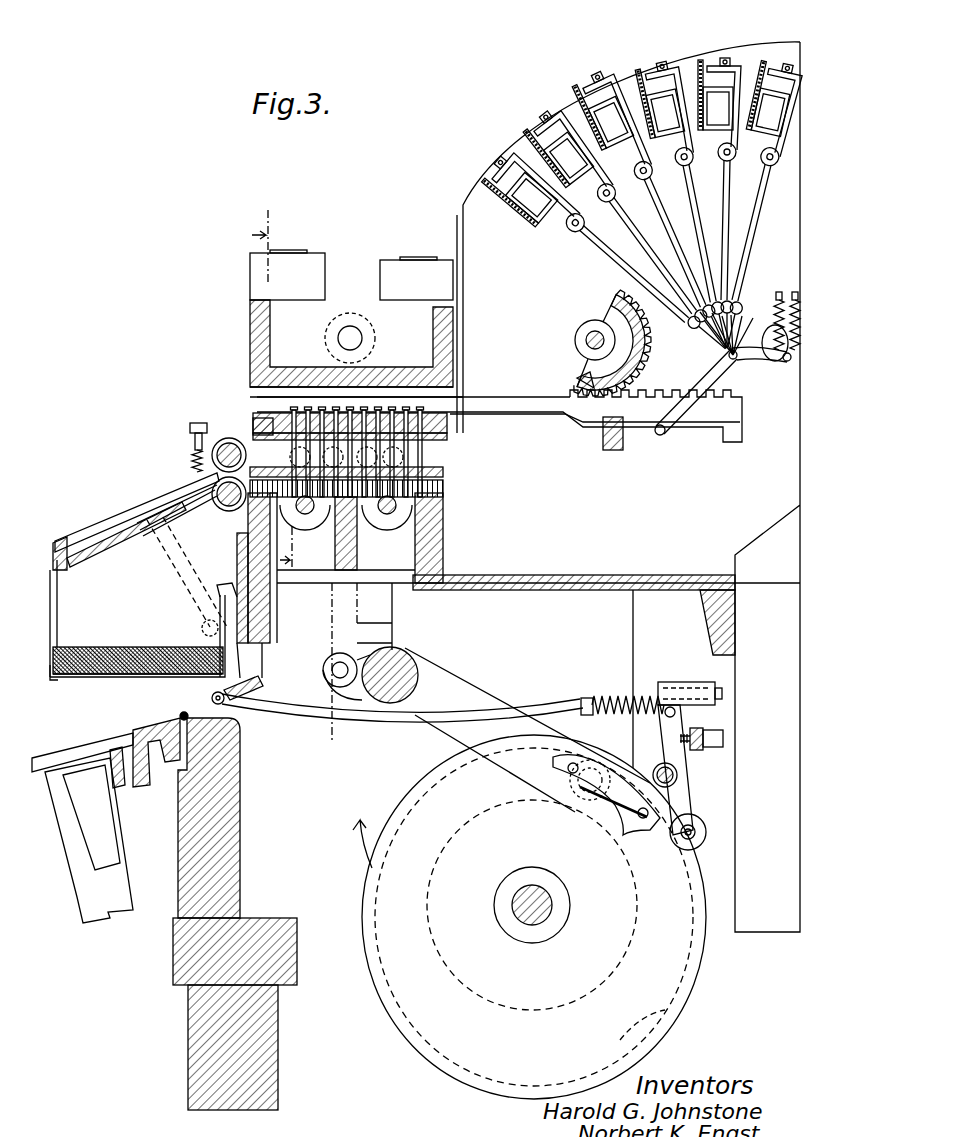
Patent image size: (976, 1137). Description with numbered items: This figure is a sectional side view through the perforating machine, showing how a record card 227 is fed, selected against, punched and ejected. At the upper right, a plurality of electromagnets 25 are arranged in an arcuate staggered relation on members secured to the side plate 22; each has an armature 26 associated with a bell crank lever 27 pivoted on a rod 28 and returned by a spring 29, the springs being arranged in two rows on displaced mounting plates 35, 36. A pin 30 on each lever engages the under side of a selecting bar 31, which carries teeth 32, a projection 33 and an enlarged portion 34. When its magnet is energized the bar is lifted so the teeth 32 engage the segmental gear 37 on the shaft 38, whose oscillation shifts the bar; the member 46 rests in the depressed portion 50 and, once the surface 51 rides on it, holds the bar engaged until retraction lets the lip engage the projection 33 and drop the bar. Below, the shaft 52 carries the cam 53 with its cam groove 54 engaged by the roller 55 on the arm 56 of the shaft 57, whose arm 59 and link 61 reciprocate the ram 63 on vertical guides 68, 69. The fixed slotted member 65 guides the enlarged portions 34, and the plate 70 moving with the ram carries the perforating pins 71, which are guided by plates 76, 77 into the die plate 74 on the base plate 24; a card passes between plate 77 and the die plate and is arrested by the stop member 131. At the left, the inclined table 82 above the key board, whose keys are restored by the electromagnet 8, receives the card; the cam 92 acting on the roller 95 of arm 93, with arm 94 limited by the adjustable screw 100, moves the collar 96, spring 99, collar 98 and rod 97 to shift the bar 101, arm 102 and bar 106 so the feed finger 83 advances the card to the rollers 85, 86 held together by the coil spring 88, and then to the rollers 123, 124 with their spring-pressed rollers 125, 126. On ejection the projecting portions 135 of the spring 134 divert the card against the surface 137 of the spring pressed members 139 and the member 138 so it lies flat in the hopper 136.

The electromagnet 8 is at (105, 835).
The side plate 22 is at (792, 298).
The base plate 24 is at (530, 582).
The electromagnet 25 is at (590, 125).
The armature 26 is at (605, 235).
The bell crank lever 27 is at (758, 370).
The rod 28 is at (728, 355).
The spring 29 is at (783, 362).
The pin 30 is at (664, 436).
The selecting bar 31 is at (520, 405).
The teeth 32 is at (578, 378).
The projection 33 is at (590, 425).
The enlarged portion 34 is at (458, 395).
The mounting plate 35 is at (777, 298).
The mounting plate 36 is at (793, 298).
The segmental gear 37 is at (615, 298).
The shaft 38 is at (588, 340).
The member 46 is at (613, 452).
The depressed portion 50 is at (622, 400).
The surface 51 is at (735, 440).
The shaft 52 is at (540, 900).
The cam 53 is at (468, 1065).
The cam groove 54 is at (668, 1022).
The roller 55 is at (565, 825).
The arm 56 is at (460, 700).
The shaft 57 is at (400, 672).
The arm 59 is at (347, 740).
The link 61 is at (345, 612).
The ram 63 is at (250, 322).
The slotted member 65 is at (300, 368).
The vertical guide 68 is at (293, 250).
The vertical guide 69 is at (408, 257).
The plate 70 is at (255, 420).
The perforating pin 71 is at (352, 410).
The die plate 74 is at (445, 512).
The plate 76 is at (262, 428).
The plate 77 is at (430, 474).
The inclined table 82 is at (130, 505).
The feed finger 83 is at (58, 547).
The roller 85 is at (193, 430).
The roller 86 is at (226, 507).
The coil spring 88 is at (193, 462).
The cam 92 is at (628, 822).
The arm 93 is at (685, 800).
The arm 94 is at (678, 772).
The roller 95 is at (706, 832).
The collar 96 is at (705, 680).
The rod 97 is at (540, 700).
The collar 98 is at (592, 698).
The spring 99 is at (668, 705).
The adjustable screw 100 is at (722, 730).
The bar 101 is at (245, 693).
The arm 102 is at (175, 592).
The bar 106 is at (120, 548).
The roller 123 is at (385, 530).
The roller 124 is at (310, 530).
The roller 125 is at (440, 448).
The roller 126 is at (222, 443).
The stop member 131 is at (435, 493).
The spring 134 is at (152, 540).
The projecting portion 135 is at (185, 481).
The hopper 136 is at (88, 680).
The surface 137 is at (62, 645).
The member 138 is at (240, 592).
The spring pressed member 139 is at (52, 668).
The card 227 is at (142, 678).